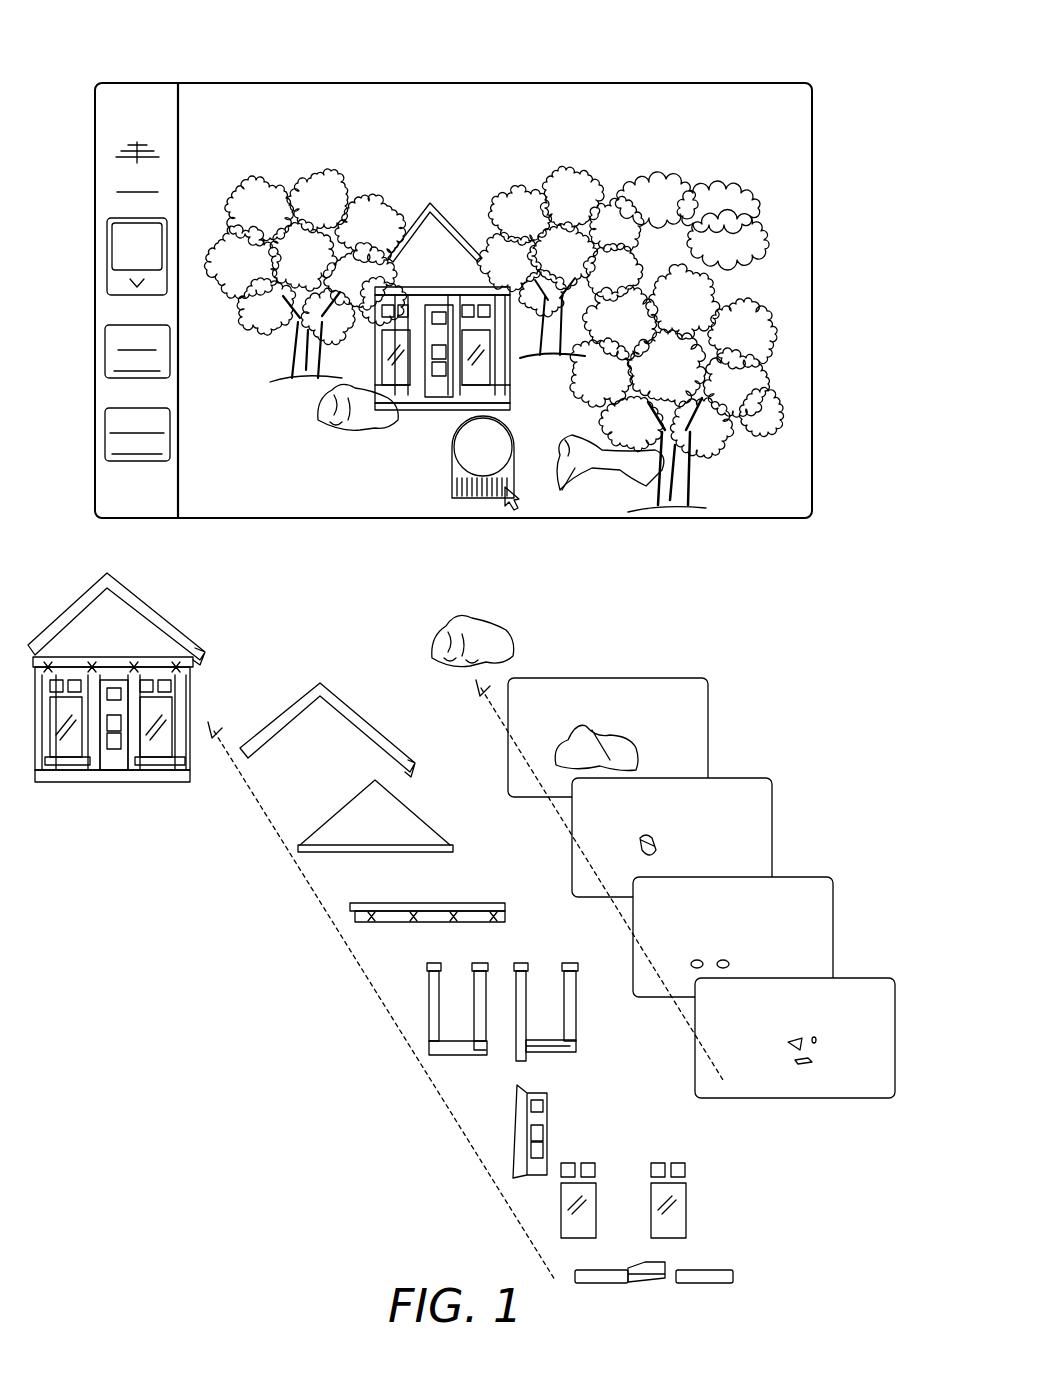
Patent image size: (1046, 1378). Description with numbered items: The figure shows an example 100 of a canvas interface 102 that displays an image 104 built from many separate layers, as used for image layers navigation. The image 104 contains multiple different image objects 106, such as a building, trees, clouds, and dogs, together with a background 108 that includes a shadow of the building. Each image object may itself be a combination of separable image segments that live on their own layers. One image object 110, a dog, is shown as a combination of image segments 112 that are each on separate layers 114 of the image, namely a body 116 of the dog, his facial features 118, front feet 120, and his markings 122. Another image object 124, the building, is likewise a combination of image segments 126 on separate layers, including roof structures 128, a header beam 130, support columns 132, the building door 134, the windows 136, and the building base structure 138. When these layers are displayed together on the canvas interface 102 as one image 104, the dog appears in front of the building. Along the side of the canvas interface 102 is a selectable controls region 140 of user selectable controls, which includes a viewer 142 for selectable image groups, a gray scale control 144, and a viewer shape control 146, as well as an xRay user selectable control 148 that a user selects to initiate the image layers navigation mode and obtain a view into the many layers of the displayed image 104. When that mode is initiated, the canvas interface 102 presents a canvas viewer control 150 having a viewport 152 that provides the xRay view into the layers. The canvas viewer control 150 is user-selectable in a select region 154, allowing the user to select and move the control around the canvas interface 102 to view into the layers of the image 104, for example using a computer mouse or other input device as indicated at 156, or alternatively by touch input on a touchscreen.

The example 100 is at (612, 68).
The canvas interface 102 is at (408, 78).
The image 104 is at (301, 117).
The image objects 106 is at (652, 168).
The background 108 is at (246, 426).
The image object 110 is at (523, 594).
The image segments 112 is at (754, 740).
The layers 114 is at (635, 678).
The body 116 is at (686, 716).
The facial features 118 is at (751, 816).
The front feet 120 is at (812, 916).
The markings 122 is at (872, 1018).
The image object 124 is at (219, 584).
The image segments 126 is at (346, 1016).
The roof structures 128 is at (441, 704).
The header beam 130 is at (516, 871).
The support columns 132 is at (579, 929).
The building door 134 is at (601, 1104).
The windows 136 is at (667, 1139).
The building base structure 138 is at (757, 1224).
The selectable controls region 140 is at (145, 105).
The viewer 142 is at (106, 215).
The gray scale control 144 is at (105, 322).
The viewer shape control 146 is at (105, 405).
The xRay user selectable control 148 is at (105, 150).
The canvas viewer control 150 is at (452, 465).
The viewport 152 is at (502, 459).
The select region 154 is at (482, 500).
The computer input device selection 156 is at (521, 500).